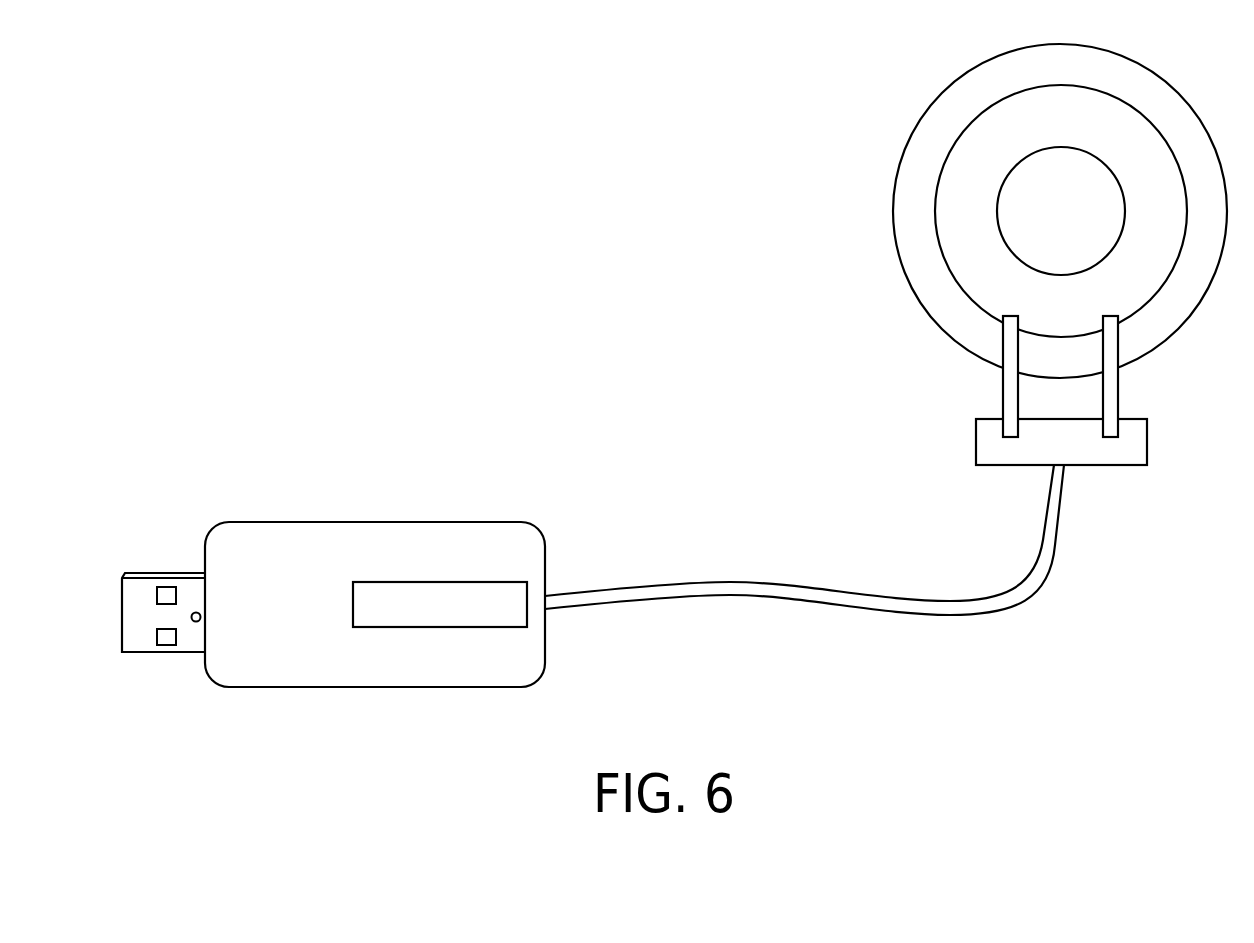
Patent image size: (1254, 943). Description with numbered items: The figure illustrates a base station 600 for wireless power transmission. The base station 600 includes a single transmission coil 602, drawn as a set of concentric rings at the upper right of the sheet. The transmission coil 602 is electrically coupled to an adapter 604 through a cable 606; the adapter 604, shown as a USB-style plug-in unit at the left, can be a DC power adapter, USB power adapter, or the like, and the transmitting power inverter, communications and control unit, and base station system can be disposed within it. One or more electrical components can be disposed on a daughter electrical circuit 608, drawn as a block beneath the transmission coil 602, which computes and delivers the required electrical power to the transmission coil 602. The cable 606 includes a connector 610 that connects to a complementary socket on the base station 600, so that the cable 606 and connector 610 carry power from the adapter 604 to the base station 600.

The base station 600 is at (868, 50).
The transmission coil 602 is at (960, 248).
The adapter 604 is at (325, 522).
The cable 606 is at (714, 581).
The daughter electrical circuit 608 is at (990, 447).
The connector 610 is at (1065, 468).